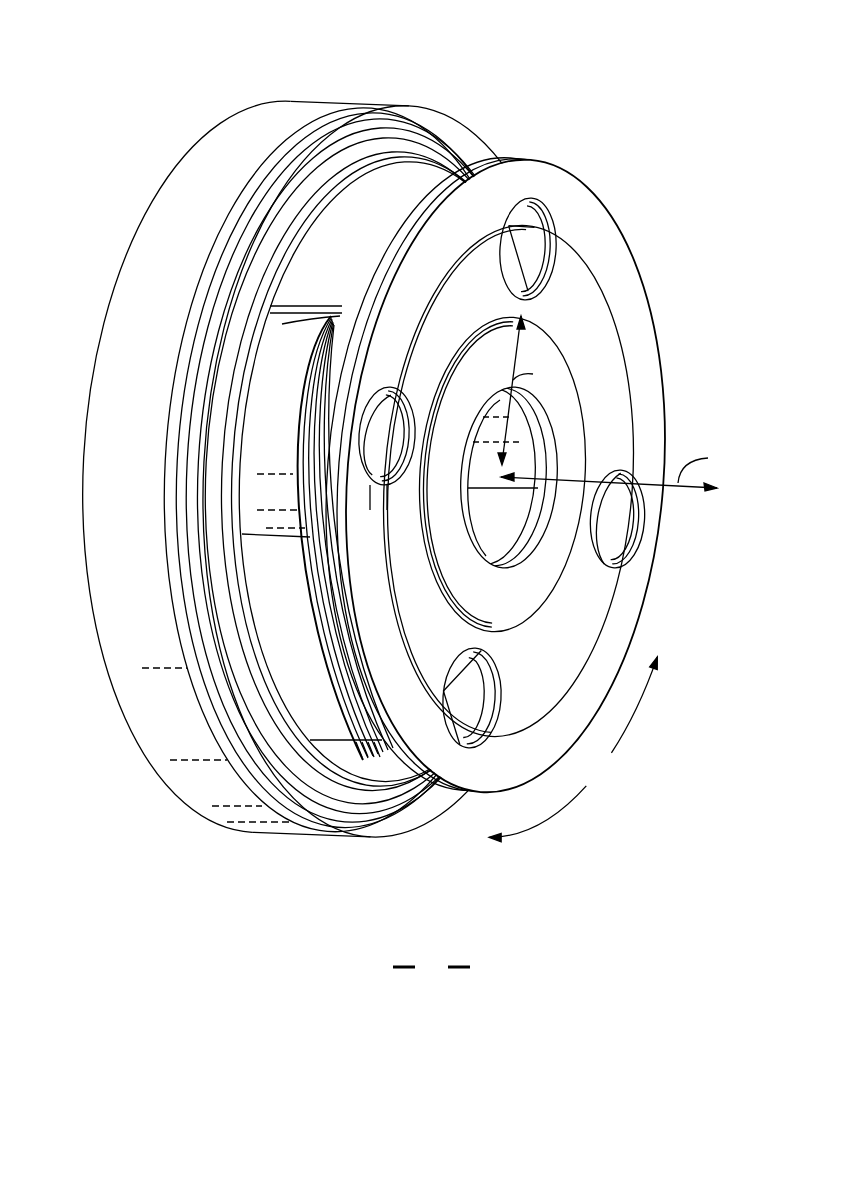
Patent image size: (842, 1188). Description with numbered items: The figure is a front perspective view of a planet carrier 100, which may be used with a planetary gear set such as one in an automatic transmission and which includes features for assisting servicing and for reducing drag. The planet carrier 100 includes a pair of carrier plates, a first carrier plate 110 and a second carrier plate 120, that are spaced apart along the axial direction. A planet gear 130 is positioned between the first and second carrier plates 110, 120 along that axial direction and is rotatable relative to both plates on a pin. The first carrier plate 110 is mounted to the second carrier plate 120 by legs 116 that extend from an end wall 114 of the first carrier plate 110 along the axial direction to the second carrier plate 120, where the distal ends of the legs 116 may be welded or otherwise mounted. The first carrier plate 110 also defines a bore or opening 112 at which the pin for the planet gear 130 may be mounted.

The planet carrier 100 is at (148, 112).
The first carrier plate 110 is at (458, 767).
The opening 112 is at (553, 200).
The end wall 114 is at (557, 228).
The legs 116 is at (373, 185).
The second carrier plate 120 is at (356, 765).
The planet gear 130 is at (298, 333).